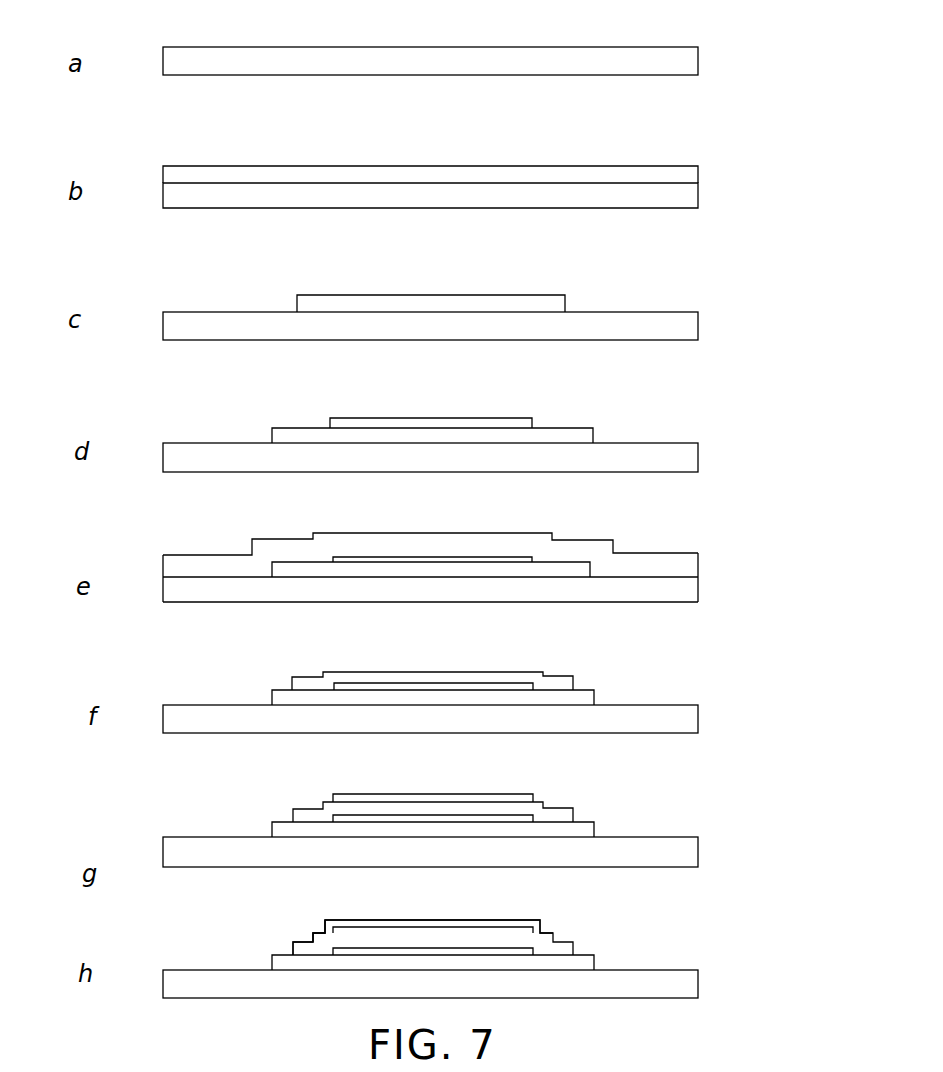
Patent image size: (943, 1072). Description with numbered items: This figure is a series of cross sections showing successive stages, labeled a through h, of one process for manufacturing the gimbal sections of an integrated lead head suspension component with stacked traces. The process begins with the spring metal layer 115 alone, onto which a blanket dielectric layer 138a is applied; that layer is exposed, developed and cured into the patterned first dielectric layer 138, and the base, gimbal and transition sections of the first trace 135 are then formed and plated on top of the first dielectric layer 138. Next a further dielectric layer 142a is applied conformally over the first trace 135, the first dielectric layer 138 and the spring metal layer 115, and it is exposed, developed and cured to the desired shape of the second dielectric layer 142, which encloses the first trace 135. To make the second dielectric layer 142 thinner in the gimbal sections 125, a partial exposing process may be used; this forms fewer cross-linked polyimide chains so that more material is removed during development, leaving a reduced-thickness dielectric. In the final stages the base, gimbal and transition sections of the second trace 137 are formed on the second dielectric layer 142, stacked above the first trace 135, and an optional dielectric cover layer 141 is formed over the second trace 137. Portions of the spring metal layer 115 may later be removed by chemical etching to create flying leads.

The spring metal layer 115 is at (698, 62).
The dielectric layer 138a is at (697, 167).
The first dielectric layer 138 is at (565, 298).
The first trace 135 is at (532, 420).
The dielectric layer 142a is at (478, 535).
The second dielectric layer 142 is at (573, 680).
The second trace 137 is at (373, 794).
The dielectric cover layer 141 is at (355, 920).
The gimbal section 125 is at (318, 931).